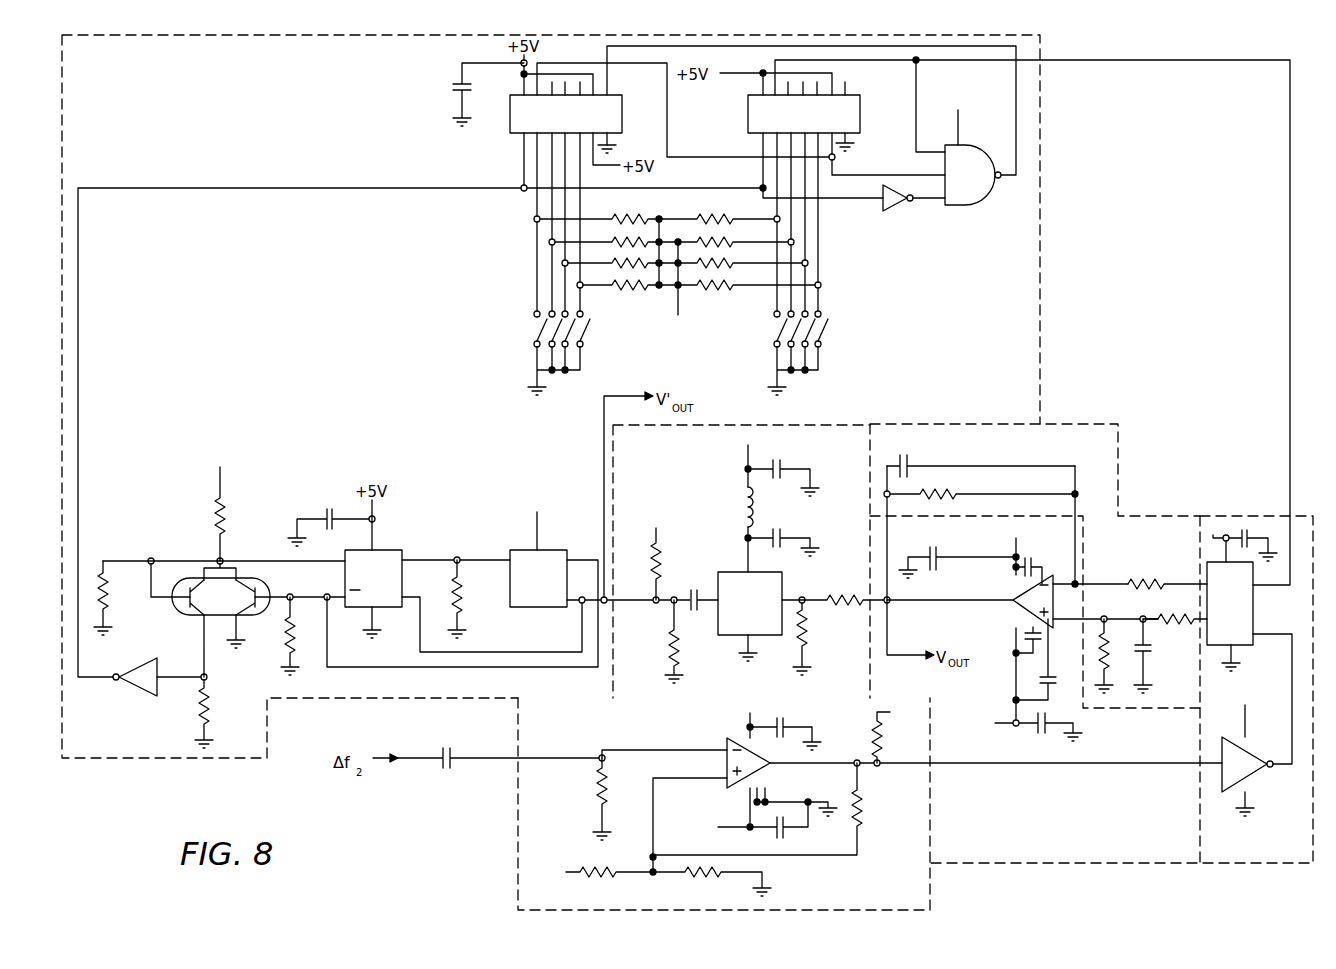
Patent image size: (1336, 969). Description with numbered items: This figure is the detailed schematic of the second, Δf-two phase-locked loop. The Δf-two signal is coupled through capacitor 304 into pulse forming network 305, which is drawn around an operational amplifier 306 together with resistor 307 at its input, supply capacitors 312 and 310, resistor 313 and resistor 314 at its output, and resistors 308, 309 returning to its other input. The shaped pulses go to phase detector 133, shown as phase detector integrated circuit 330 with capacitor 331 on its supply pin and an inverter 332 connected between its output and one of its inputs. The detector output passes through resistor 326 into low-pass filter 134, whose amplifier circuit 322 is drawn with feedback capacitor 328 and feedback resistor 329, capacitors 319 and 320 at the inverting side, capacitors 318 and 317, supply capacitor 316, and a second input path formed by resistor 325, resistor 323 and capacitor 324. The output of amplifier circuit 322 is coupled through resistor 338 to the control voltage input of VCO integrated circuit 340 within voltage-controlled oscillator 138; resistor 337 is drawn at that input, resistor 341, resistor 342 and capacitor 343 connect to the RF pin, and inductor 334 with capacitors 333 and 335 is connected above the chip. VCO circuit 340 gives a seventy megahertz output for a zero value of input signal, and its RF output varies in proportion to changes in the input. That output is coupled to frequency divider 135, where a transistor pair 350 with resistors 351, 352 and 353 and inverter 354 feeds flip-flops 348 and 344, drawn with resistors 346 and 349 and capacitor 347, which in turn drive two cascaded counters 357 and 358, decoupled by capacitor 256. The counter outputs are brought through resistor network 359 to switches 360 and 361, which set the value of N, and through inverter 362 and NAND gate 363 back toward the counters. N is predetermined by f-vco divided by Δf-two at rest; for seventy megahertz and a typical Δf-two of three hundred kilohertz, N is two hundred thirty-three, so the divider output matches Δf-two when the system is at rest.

The capacitor 256 is at (484, 80).
The counter 357 is at (517, 120).
The counter 358 is at (750, 120).
The resistor network 359 is at (692, 262).
The switches 360 is at (505, 336).
The switches 361 is at (845, 334).
The inverter 362 is at (897, 205).
The NAND gate 363 is at (970, 156).
The capacitor 347 is at (327, 512).
The flip-flop 348 is at (380, 552).
The flip-flop 344 is at (530, 550).
The resistor 346 is at (463, 600).
The resistor 349 is at (286, 630).
The transistor pair 350 is at (262, 590).
The resistor 351 is at (235, 513).
The resistor 352 is at (212, 713).
The resistor 353 is at (112, 597).
The inverter 354 is at (130, 688).
The capacitor 333 is at (783, 456).
The inductor 334 is at (740, 505).
The capacitor 335 is at (780, 530).
The VCO integrated circuit 340 is at (745, 573).
The resistor 341 is at (668, 566).
The resistor 342 is at (669, 648).
The capacitor 343 is at (692, 590).
The resistor 337 is at (812, 636).
The resistor 338 is at (843, 593).
The capacitor 328 is at (912, 466).
The resistor 329 is at (940, 494).
The capacitor 319 is at (932, 555).
The capacitor 320 is at (1035, 562).
The amplifier circuit 322 is at (1012, 598).
The capacitor 318 is at (1024, 636).
The capacitor 317 is at (1052, 676).
The capacitor 316 is at (1040, 732).
The resistor 323 is at (1110, 664).
The capacitor 324 is at (1152, 650).
The resistor 325 is at (1172, 619).
The resistor 326 is at (1146, 582).
The capacitor 331 is at (1245, 530).
The phase detector chip 330 is at (1254, 608).
The inverter 332 is at (1247, 758).
The capacitor 304 is at (454, 750).
The resistor 307 is at (595, 783).
The operational amplifier 306 is at (725, 762).
The capacitor 312 is at (784, 722).
The resistor 313 is at (872, 742).
The capacitor 310 is at (786, 835).
The resistor 314 is at (866, 818).
The resistor 308 is at (597, 878).
The resistor 309 is at (702, 878).
The frequency divider 135 is at (1025, 391).
The low-pass filter 134 is at (1070, 446).
The voltage-controlled oscillator 138 is at (697, 447).
The pulse forming network 305 is at (682, 722).
The phase detector 133 is at (1305, 841).